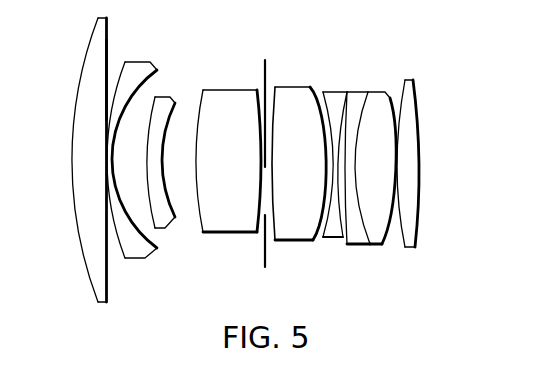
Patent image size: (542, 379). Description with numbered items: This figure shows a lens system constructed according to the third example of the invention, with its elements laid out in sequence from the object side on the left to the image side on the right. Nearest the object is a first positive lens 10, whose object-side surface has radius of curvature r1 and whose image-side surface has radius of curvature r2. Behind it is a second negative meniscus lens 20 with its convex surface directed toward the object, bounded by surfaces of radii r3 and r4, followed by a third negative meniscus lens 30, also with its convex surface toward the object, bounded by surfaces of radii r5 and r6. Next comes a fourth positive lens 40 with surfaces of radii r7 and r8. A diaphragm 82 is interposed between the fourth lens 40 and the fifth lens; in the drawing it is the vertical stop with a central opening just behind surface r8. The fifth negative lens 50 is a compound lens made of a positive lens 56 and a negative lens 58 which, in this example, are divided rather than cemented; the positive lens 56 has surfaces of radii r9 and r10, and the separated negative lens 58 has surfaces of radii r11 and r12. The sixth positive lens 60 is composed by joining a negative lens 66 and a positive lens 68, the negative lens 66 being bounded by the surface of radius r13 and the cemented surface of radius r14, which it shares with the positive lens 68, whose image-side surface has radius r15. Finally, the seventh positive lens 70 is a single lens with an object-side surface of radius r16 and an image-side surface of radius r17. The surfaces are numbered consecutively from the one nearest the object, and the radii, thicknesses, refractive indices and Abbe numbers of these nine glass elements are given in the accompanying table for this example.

The first positive lens 10 is at (78, 171).
The second negative meniscus lens 20 is at (132, 160).
The third negative meniscus lens 30 is at (159, 180).
The fourth positive lens 40 is at (228, 179).
The fifth negative lens 50 is at (299, 188).
The positive lens 56 is at (299, 188).
The negative lens 58 is at (312, 165).
The sixth positive lens 60 is at (379, 196).
The negative lens 66 is at (364, 196).
The positive lens 68 is at (389, 184).
The seventh positive lens 70 is at (427, 168).
The diaphragm 82 is at (268, 73).
The radius of curvature of first surface r1 is at (92, 46).
The radius of curvature of second surface r2 is at (78, 80).
The radius of curvature of third surface r3 is at (120, 75).
The radius of curvature of fourth surface r4 is at (134, 156).
The radius of curvature of fifth surface r5 is at (149, 152).
The radius of curvature of sixth surface r6 is at (163, 156).
The radius of curvature of seventh surface r7 is at (199, 132).
The radius of curvature of eighth surface r8 is at (231, 250).
The radius of curvature of ninth surface r9 is at (277, 131).
The radius of curvature of tenth surface r10 is at (307, 163).
The radius of curvature of eleventh surface r11 is at (316, 149).
The radius of curvature of twelfth surface r12 is at (325, 255).
The radius of curvature of thirteenth surface r13 is at (348, 212).
The radius of curvature of fourteenth surface r14 is at (357, 165).
The radius of curvature of fifteenth surface r15 is at (389, 106).
The radius of curvature of sixteenth surface r16 is at (403, 102).
The radius of curvature of seventeenth surface r17 is at (420, 149).